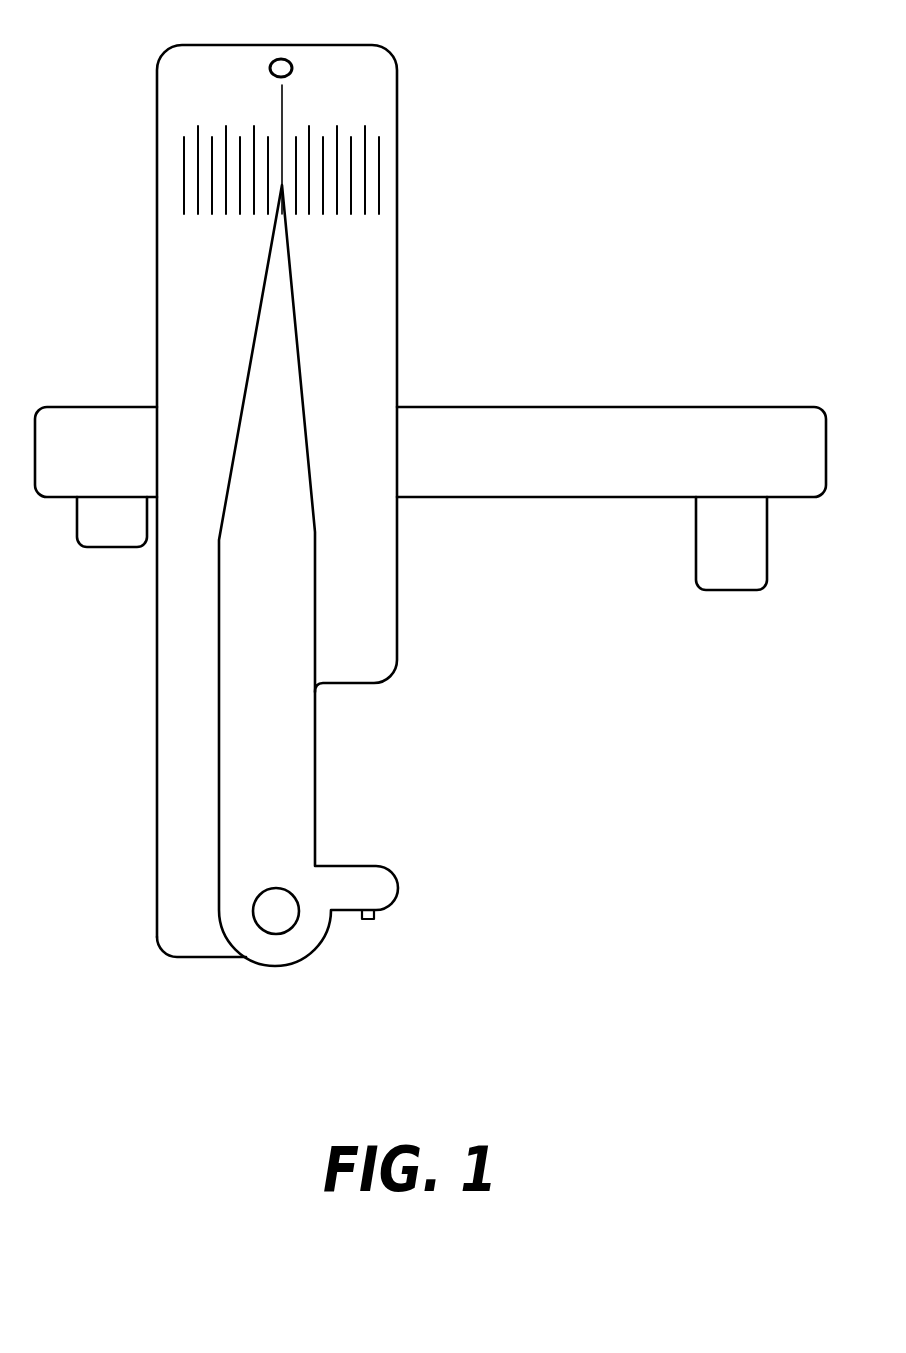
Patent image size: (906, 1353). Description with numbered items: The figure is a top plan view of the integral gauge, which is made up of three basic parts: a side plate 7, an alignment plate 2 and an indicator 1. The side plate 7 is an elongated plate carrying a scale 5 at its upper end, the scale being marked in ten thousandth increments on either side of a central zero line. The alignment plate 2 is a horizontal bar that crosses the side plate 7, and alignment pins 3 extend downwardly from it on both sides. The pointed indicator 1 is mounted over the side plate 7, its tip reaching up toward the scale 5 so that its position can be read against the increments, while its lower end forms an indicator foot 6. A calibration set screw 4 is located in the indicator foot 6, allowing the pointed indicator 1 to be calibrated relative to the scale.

The indicator 1 is at (314, 330).
The alignment plate 2 is at (575, 524).
The alignment pins 3 is at (117, 569).
The calibration set screw 4 is at (378, 934).
The scale 5 is at (406, 87).
The indicator foot 6 is at (430, 843).
The side plate 7 is at (156, 238).